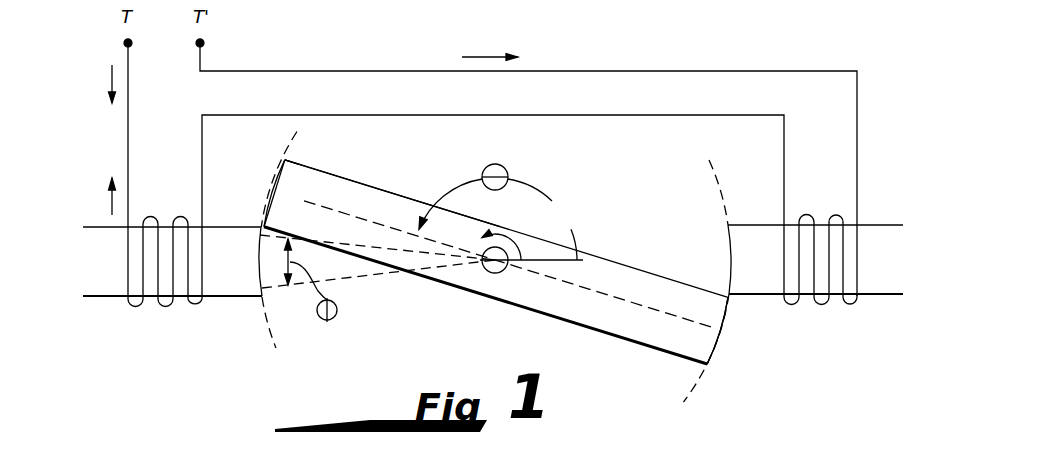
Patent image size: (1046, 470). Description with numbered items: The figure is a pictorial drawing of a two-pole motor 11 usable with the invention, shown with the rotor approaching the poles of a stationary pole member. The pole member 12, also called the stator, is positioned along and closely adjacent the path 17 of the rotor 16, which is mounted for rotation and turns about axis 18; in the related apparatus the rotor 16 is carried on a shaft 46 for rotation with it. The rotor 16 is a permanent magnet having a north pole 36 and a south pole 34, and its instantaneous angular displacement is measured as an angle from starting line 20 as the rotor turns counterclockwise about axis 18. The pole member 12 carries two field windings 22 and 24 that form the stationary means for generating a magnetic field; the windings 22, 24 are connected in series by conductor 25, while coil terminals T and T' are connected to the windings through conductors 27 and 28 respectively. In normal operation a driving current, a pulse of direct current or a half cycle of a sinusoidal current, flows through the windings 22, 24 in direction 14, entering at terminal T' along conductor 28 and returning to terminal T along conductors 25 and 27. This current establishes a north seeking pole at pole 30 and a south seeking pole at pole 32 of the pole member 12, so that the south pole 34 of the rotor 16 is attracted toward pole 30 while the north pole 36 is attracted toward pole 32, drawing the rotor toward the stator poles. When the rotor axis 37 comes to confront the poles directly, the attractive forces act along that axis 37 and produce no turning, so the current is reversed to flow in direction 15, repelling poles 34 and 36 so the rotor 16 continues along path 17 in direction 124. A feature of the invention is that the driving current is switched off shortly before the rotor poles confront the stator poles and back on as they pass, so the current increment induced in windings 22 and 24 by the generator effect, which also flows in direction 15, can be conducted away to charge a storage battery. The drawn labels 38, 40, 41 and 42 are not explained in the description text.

The two-pole motor 11 is at (807, 30).
The pole member 12 is at (107, 297).
The direction of driving current 14 is at (105, 193).
The direction of reversed or induced current 15 is at (110, 78).
The rotor 16 is at (557, 316).
The path of the rotor 17 is at (712, 172).
The axis of rotation 18 is at (493, 272).
The starting line 20 is at (556, 260).
The field winding 22 is at (160, 306).
The field winding 24 is at (822, 304).
The conductor 25 is at (392, 115).
The conductor 27 is at (127, 123).
The conductor 28 is at (368, 71).
The pole 30 is at (728, 226).
The pole 32 is at (262, 287).
The south pole 34 is at (712, 352).
The north pole 36 is at (281, 163).
The axis of the rotor 37 is at (640, 304).
The north pole end face 38 is at (265, 224).
The magnet corner 40 is at (262, 225).
The magnet top edge 41 is at (317, 169).
The left pole face 42 is at (260, 297).
The shaft 46 is at (502, 278).
The direction of rotation 124 is at (512, 241).